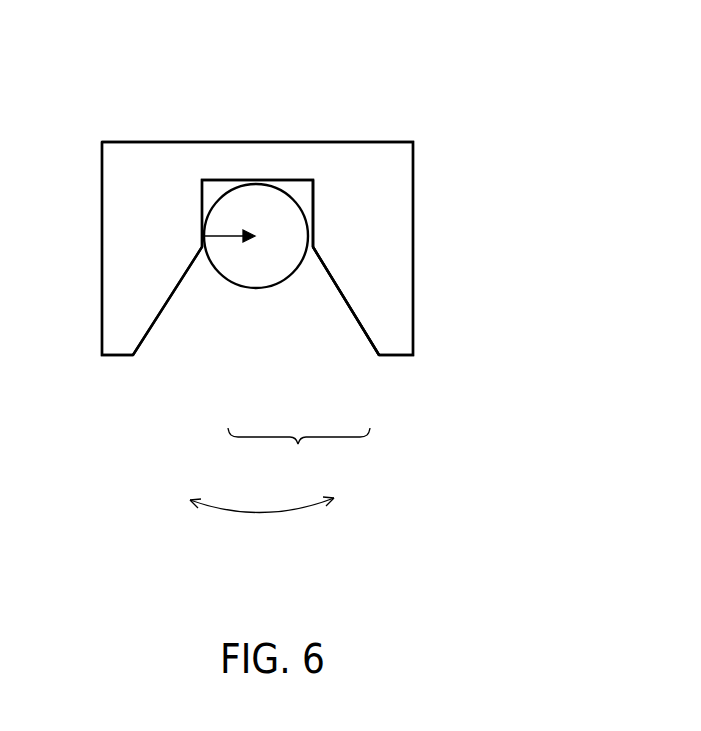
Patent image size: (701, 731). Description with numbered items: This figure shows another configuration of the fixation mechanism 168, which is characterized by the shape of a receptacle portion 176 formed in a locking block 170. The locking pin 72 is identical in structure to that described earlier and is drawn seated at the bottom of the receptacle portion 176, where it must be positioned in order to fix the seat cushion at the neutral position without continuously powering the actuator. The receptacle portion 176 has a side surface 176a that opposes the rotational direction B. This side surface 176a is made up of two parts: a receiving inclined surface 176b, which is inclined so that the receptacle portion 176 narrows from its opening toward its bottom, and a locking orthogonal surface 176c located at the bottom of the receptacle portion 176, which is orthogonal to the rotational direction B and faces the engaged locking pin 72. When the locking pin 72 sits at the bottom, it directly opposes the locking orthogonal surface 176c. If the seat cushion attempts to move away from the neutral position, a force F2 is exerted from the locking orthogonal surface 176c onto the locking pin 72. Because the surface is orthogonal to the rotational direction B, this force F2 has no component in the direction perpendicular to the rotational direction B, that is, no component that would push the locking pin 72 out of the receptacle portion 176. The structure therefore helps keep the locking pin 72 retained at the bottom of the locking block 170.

The fixation mechanism 168 is at (405, 107).
The locking block 170 is at (138, 173).
The receptacle portion 176 is at (188, 318).
The side surface 176a is at (299, 460).
The receiving inclined surface 176b is at (350, 310).
The locking orthogonal surface 176c is at (310, 203).
The locking pin 72 is at (238, 265).
The force F2 is at (228, 232).
The rotational direction B is at (228, 511).